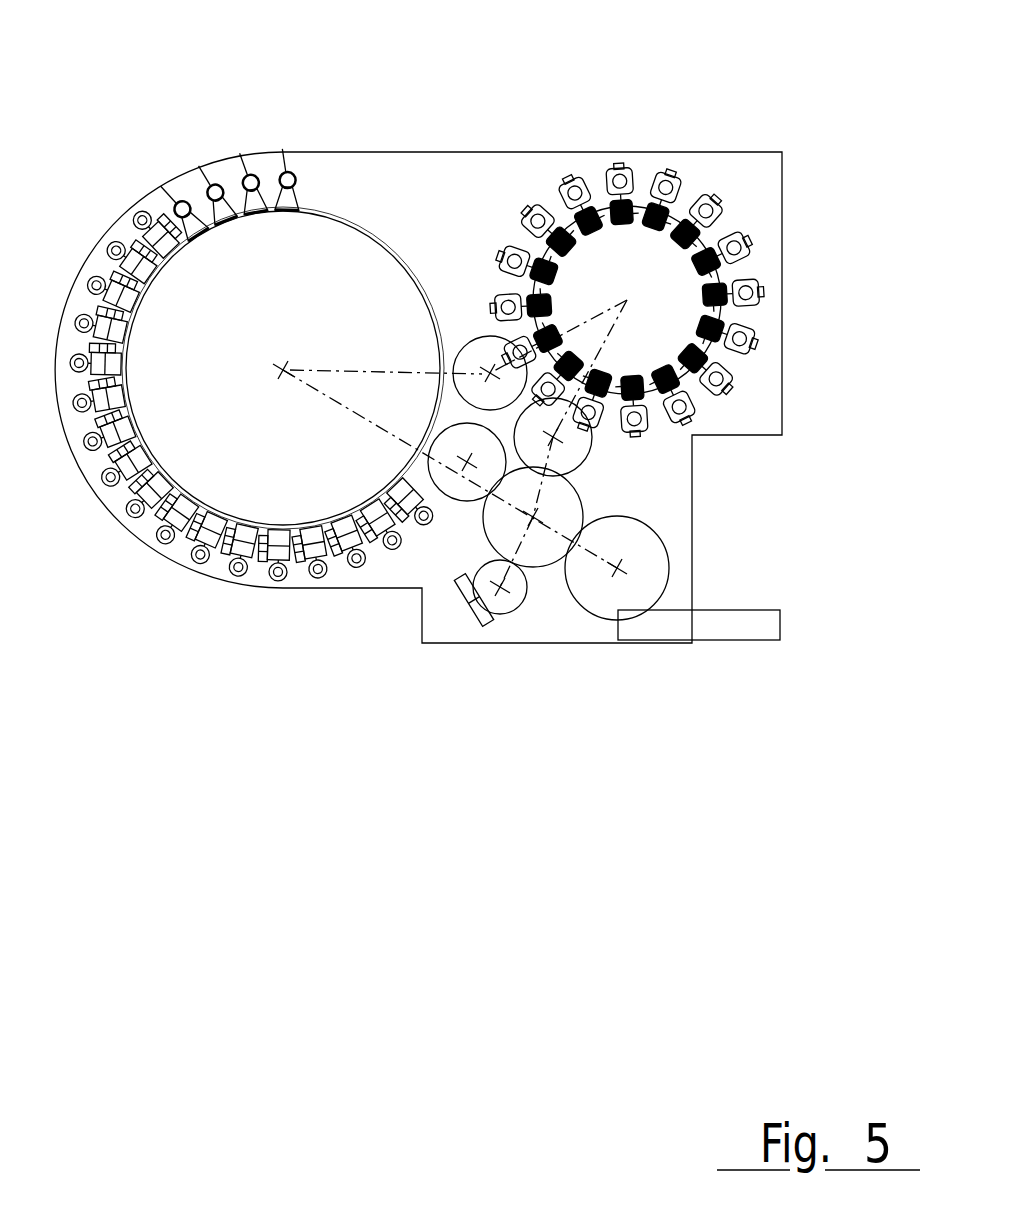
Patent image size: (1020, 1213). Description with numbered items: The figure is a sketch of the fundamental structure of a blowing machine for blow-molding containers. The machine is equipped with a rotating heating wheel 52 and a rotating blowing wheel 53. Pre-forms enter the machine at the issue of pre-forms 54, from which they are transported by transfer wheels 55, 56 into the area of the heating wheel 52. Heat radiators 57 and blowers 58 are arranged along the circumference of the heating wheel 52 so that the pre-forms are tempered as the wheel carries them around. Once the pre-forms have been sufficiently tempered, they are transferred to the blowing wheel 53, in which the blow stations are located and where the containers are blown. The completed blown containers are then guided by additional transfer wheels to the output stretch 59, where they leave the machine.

The heating wheel 52 is at (254, 375).
The blowing wheel 53 is at (688, 205).
The issue of pre-forms 54 is at (470, 620).
The transfer wheel 55 is at (540, 555).
The transfer wheel 56 is at (462, 488).
The heat radiators 57 is at (225, 553).
The blowers 58 is at (195, 557).
The output stretch 59 is at (747, 620).